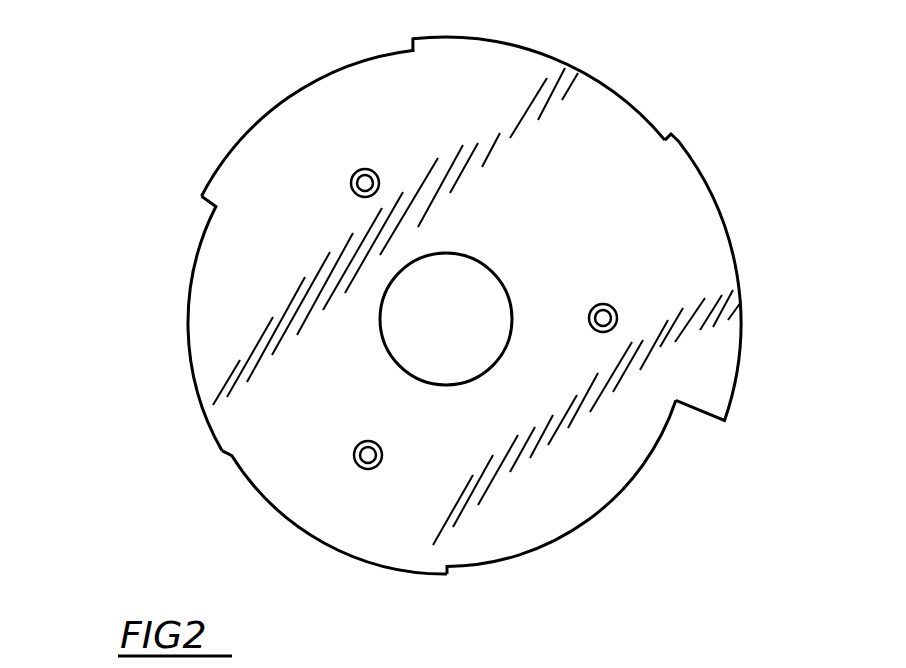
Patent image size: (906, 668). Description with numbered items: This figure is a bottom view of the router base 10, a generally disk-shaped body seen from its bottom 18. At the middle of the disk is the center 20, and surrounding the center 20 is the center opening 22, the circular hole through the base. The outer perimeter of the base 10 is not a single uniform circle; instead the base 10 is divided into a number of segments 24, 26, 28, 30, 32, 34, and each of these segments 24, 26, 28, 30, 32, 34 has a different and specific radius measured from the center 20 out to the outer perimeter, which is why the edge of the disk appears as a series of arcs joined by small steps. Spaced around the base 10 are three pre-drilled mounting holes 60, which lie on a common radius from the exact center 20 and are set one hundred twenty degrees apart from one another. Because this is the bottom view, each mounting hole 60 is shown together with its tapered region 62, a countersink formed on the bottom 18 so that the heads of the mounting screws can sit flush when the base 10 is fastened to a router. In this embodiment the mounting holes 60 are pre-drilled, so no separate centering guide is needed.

The router base 10 is at (426, 308).
The bottom 18 is at (538, 169).
The center 20 is at (478, 300).
The center opening 22 is at (490, 267).
The segment 24 is at (561, 487).
The segment 26 is at (334, 524).
The segment 28 is at (176, 323).
The segment 30 is at (307, 123).
The segment 32 is at (539, 80).
The segment 34 is at (731, 277).
The mounting holes 60 is at (352, 182).
The tapered region 62 is at (368, 196).